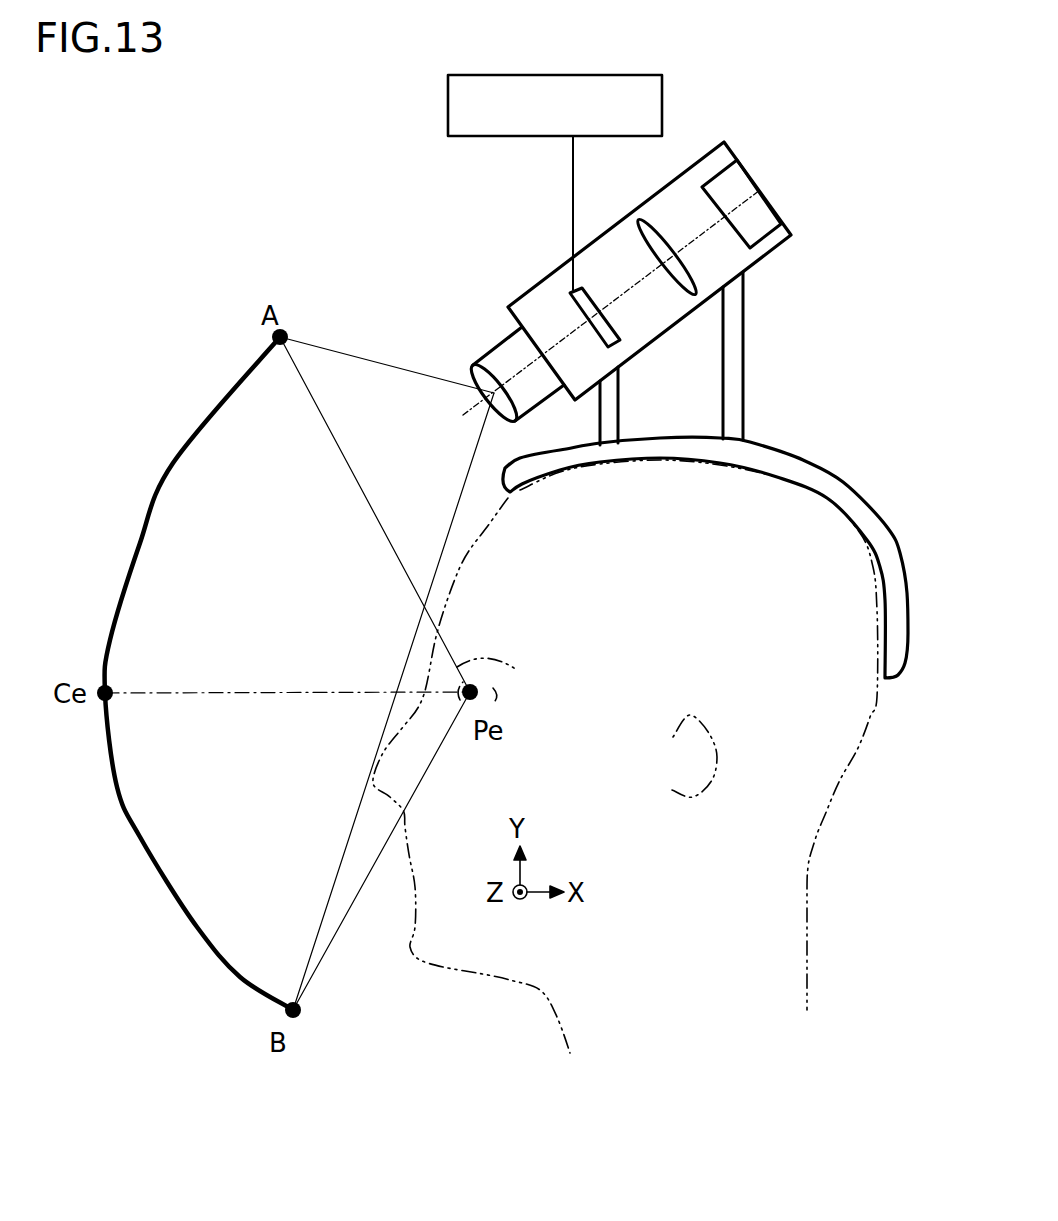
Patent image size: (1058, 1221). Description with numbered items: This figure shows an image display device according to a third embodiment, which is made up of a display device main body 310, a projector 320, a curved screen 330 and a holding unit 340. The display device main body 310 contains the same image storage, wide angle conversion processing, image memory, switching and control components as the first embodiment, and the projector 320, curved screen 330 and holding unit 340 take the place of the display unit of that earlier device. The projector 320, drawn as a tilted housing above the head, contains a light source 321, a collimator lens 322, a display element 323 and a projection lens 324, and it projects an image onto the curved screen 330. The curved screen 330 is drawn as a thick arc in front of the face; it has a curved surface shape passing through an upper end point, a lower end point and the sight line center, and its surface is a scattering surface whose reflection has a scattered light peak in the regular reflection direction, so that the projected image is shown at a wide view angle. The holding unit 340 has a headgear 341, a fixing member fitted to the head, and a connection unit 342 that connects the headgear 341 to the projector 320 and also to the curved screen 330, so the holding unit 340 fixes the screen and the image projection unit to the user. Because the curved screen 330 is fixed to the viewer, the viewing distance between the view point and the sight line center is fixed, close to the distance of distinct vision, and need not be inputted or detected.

The display device main body 310 is at (448, 110).
The projector 320 is at (522, 297).
The light source 321 is at (730, 223).
The collimator lens 322 is at (667, 282).
The display element 323 is at (600, 327).
The projection lens 324 is at (472, 372).
The curved screen 330 is at (175, 462).
The holding unit 340 is at (830, 318).
The headgear 341 is at (763, 440).
The connection unit 342 is at (743, 333).